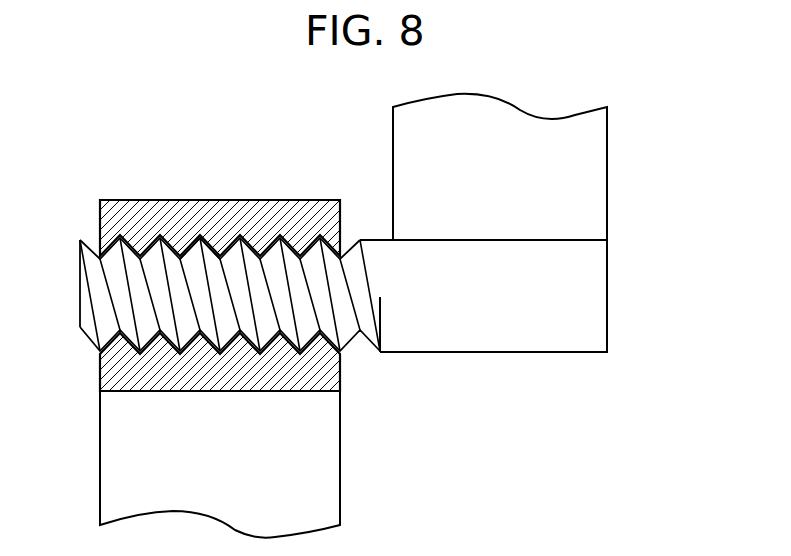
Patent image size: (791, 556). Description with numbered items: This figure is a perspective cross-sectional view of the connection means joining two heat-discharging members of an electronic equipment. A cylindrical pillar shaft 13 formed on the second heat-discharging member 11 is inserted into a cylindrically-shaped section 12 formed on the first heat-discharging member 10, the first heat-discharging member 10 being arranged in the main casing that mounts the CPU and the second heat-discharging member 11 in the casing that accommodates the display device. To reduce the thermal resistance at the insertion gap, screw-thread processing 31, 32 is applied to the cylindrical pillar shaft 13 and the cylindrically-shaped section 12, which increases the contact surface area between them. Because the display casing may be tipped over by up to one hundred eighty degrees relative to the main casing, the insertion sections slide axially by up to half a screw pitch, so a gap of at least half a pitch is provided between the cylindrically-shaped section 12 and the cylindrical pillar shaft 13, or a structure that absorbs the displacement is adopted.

The first heat-discharging member 10 is at (328, 473).
The second heat-discharging member 11 is at (600, 162).
The cylindrically-shaped section 12 is at (108, 217).
The cylindrical pillar shaft 13 is at (600, 298).
The screw-thread processing 31 is at (265, 247).
The screw-thread processing 32 is at (198, 245).